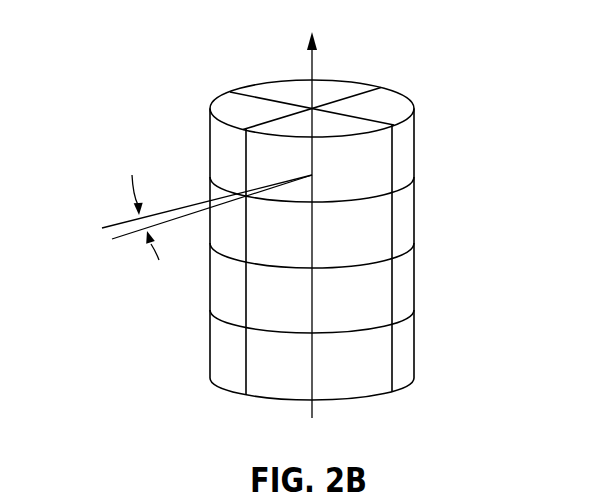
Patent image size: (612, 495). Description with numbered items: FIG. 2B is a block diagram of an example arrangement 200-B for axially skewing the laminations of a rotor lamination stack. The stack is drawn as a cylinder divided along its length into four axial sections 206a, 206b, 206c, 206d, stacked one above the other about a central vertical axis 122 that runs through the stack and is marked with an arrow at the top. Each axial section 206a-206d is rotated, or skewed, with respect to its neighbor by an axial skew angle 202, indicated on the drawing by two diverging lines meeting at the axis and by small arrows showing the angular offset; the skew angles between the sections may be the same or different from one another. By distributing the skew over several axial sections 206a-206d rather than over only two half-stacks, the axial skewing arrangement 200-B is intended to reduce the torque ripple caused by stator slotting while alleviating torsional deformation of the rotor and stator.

The arrangement 200-B is at (472, 77).
The rotation axis 122 is at (313, 70).
The axial skew angle 202 is at (150, 246).
The axial section 206a is at (407, 150).
The axial section 206b is at (407, 215).
The axial section 206c is at (407, 287).
The axial section 206d is at (407, 357).